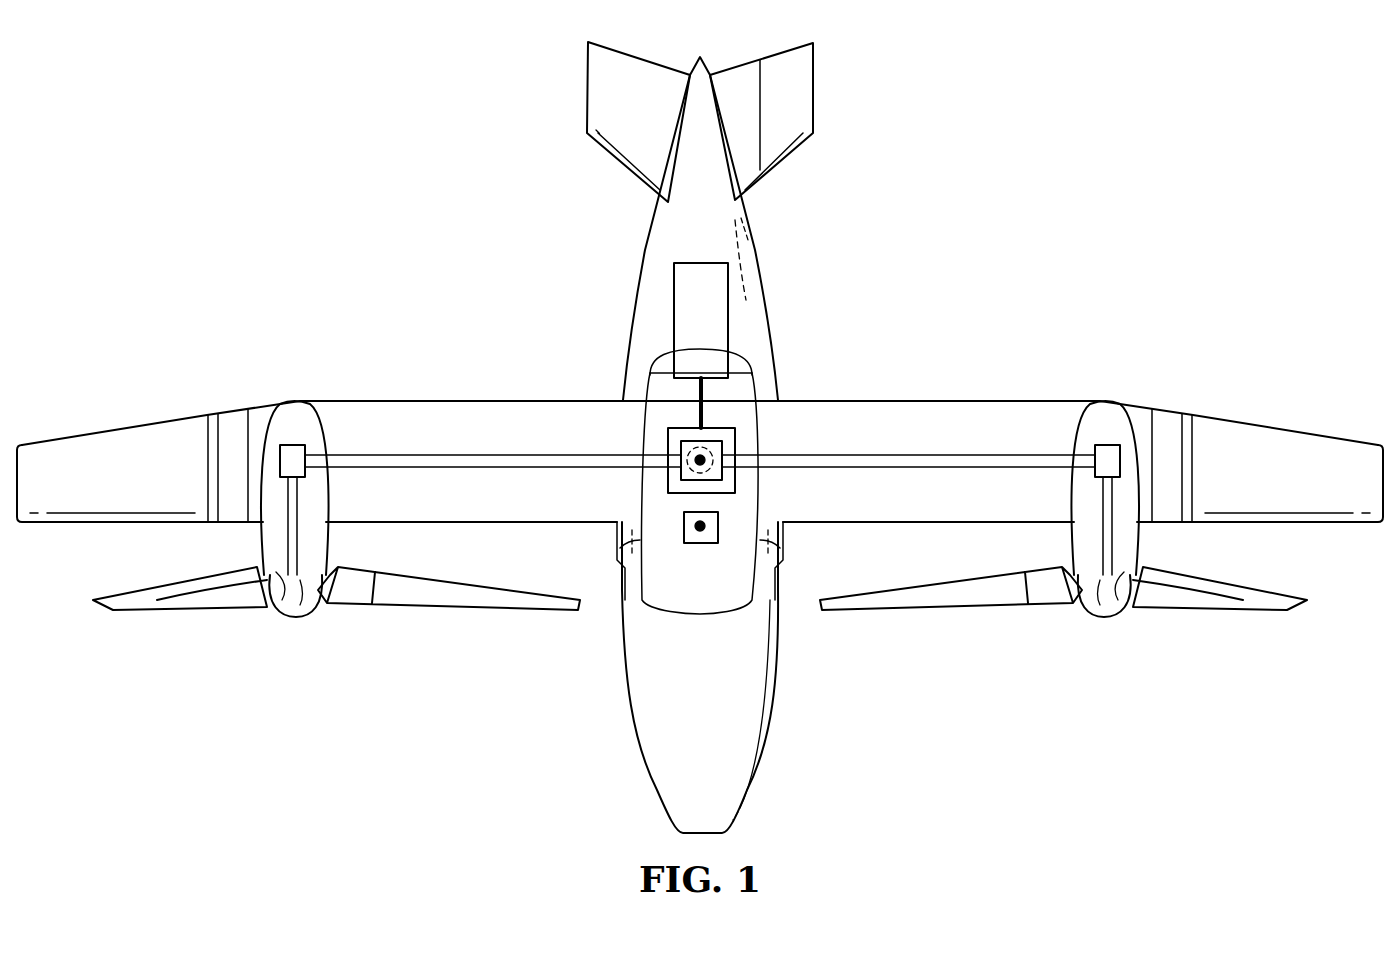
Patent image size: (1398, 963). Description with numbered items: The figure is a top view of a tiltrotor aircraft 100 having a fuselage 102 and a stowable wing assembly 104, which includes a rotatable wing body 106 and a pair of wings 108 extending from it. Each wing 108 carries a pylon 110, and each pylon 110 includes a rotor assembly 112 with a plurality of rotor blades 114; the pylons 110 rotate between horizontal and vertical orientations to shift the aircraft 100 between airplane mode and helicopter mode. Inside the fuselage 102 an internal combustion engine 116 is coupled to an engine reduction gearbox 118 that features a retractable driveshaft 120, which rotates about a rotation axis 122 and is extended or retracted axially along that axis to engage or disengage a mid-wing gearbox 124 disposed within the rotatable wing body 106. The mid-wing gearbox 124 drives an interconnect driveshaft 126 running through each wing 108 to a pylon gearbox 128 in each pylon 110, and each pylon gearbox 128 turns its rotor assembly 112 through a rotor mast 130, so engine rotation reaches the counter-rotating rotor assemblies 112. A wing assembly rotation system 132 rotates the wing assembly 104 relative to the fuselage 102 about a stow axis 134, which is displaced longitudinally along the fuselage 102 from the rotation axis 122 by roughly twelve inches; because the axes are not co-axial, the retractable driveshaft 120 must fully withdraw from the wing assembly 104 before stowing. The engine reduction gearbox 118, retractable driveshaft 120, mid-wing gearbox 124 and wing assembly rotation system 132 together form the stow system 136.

The aircraft 100 is at (1026, 94).
The fuselage 102 is at (627, 703).
The stowable wing assembly 104 is at (410, 396).
The rotatable wing body 106 is at (660, 535).
The wing 108 is at (535, 401).
The pylon 110 is at (263, 540).
The rotor assembly 112 is at (291, 622).
The rotor blade 114 is at (137, 592).
The internal combustion engine 116 is at (729, 297).
The engine reduction gearbox 118 is at (712, 428).
The retractable driveshaft 120 is at (698, 448).
The rotation axis 122 is at (698, 468).
The mid-wing gearbox 124 is at (736, 477).
The interconnect driveshaft 126 is at (484, 478).
The pylon gearbox 128 is at (290, 445).
The rotor mast 130 is at (323, 556).
The wing assembly rotation system 132 is at (694, 545).
The stow axis 134 is at (700, 532).
The stow system 136 is at (752, 430).